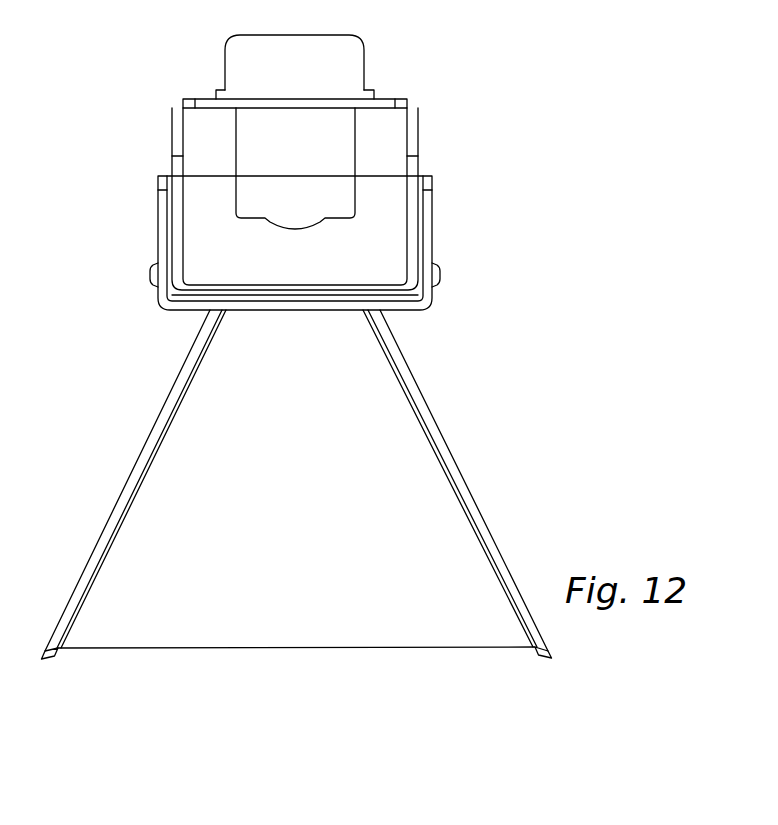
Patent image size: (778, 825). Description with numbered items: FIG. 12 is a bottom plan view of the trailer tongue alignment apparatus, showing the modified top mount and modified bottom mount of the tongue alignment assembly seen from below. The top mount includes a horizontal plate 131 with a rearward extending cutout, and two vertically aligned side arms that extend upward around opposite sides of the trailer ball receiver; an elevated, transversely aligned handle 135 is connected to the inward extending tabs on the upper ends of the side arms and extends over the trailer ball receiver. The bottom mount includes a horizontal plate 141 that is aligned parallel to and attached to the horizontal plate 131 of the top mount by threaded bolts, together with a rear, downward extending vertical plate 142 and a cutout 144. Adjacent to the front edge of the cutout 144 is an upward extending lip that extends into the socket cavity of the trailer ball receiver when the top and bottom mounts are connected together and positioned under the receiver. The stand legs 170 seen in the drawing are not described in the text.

The handle 135 is at (220, 57).
The vertical plate 142 is at (383, 100).
The cutout 144 is at (265, 152).
The horizontal plate 131 is at (417, 167).
The horizontal plate 141 is at (205, 247).
The stand legs 170 is at (118, 494).